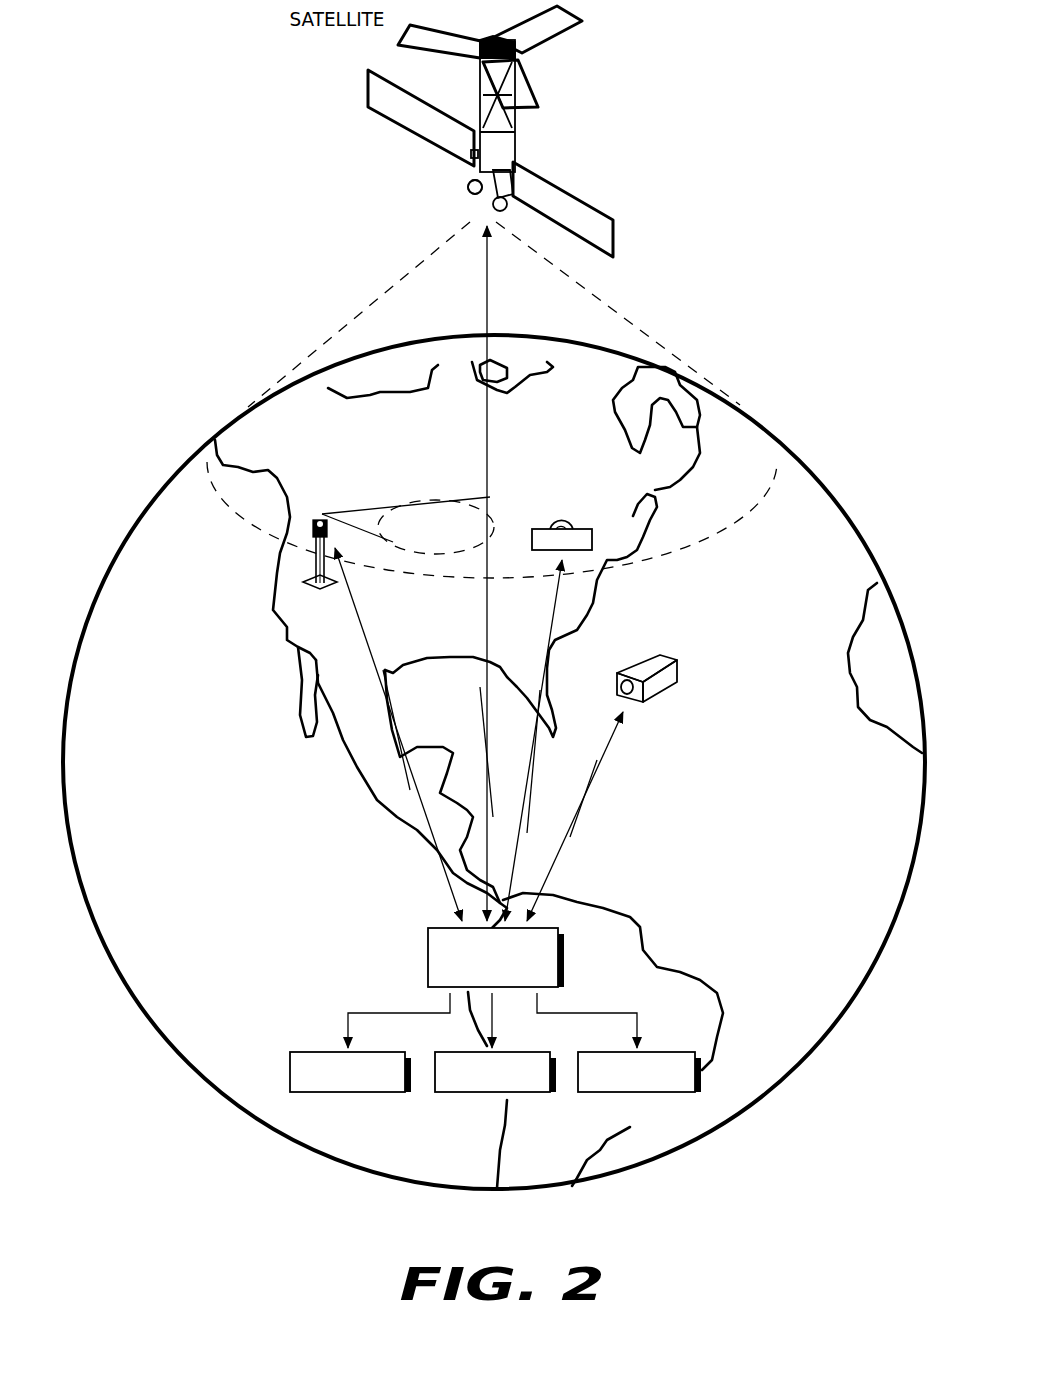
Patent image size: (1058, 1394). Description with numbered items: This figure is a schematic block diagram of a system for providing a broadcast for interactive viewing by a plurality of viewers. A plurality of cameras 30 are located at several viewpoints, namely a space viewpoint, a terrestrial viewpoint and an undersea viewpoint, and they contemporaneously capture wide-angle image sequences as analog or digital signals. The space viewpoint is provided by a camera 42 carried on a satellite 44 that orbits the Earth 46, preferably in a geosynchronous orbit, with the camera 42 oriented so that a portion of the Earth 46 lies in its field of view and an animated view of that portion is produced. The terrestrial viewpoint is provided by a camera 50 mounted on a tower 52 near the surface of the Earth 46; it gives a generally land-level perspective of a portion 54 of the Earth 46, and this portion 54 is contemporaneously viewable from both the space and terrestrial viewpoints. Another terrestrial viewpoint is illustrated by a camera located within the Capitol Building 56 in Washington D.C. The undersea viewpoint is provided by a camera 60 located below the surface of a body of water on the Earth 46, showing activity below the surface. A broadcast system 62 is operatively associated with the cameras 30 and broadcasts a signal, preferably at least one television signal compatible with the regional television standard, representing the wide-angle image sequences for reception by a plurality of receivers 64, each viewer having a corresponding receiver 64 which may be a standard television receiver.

The cameras 30 is at (557, 117).
The camera 42 is at (470, 195).
The satellite 44 is at (422, 127).
The Earth 46 is at (173, 477).
The camera 50 is at (318, 518).
The tower 52 is at (334, 589).
The portion of the Earth 54 is at (477, 505).
The Capitol Building 56 is at (565, 518).
The camera 60 is at (663, 683).
The broadcast system 62 is at (428, 958).
The receivers 64 is at (348, 1100).